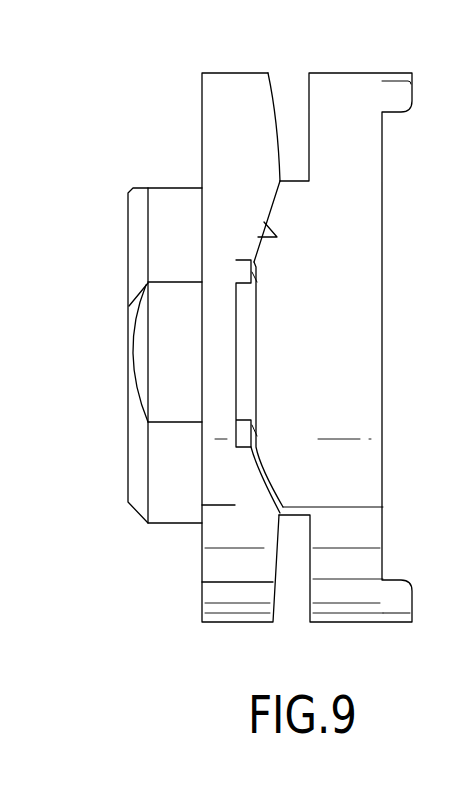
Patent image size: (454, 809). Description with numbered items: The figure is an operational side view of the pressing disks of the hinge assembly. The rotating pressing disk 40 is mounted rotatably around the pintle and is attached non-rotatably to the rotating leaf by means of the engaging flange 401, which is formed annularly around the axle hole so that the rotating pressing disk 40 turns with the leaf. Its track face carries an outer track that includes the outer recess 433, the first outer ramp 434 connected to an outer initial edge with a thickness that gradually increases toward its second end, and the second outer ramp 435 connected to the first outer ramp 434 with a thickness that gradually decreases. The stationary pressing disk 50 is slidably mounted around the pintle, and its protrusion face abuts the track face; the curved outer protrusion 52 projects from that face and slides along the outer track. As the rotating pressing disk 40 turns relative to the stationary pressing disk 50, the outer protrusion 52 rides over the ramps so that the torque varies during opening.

The rotating pressing disk 40 is at (238, 613).
The stationary pressing disk 50 is at (333, 609).
The outer protrusion 52 is at (293, 198).
The engaging flange 401 is at (173, 512).
The outer recess 433 is at (228, 350).
The first outer ramp 434 is at (270, 237).
The second outer ramp 435 is at (274, 90).